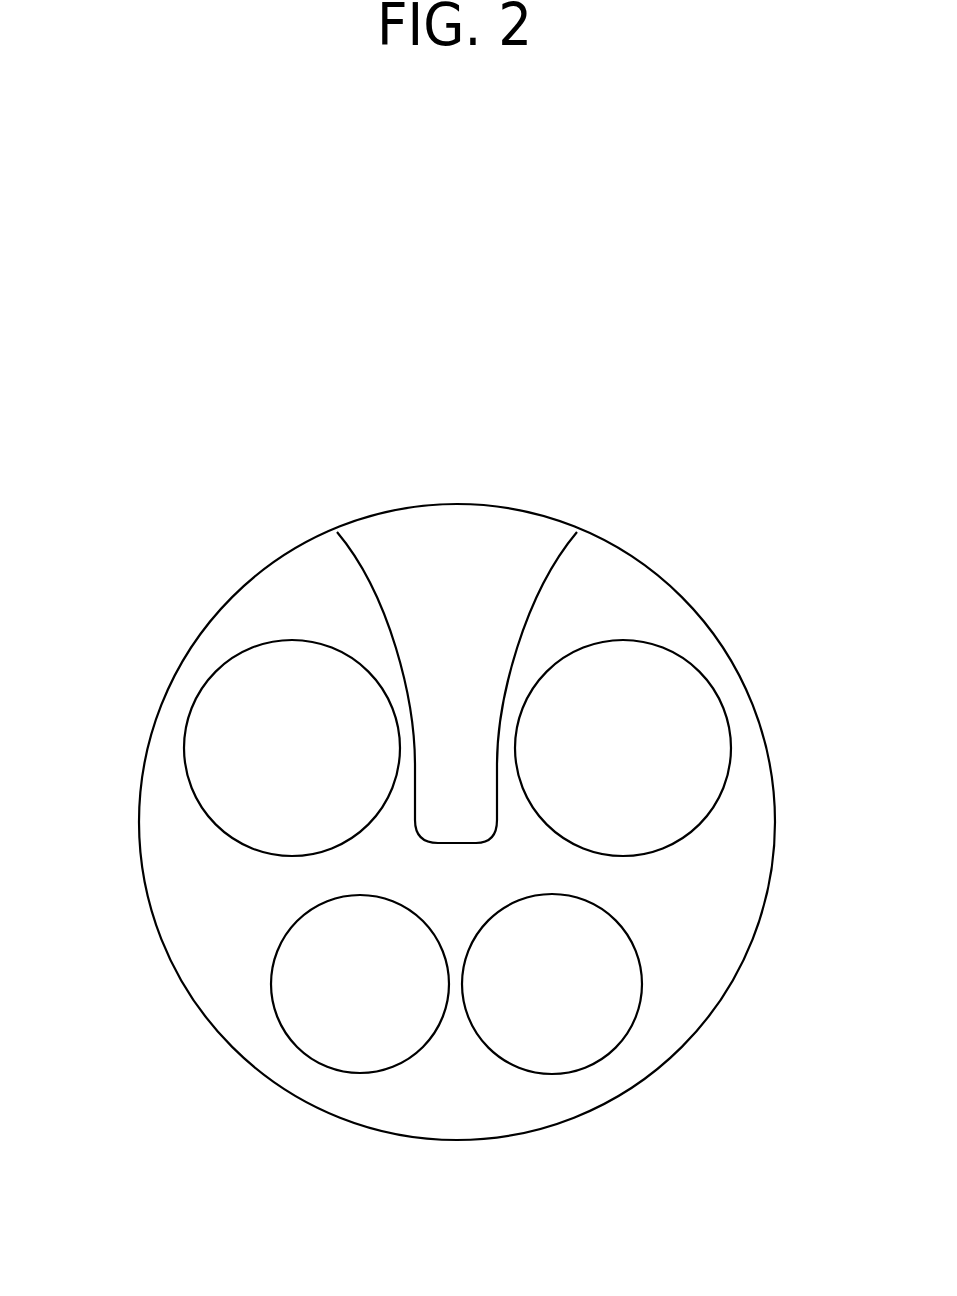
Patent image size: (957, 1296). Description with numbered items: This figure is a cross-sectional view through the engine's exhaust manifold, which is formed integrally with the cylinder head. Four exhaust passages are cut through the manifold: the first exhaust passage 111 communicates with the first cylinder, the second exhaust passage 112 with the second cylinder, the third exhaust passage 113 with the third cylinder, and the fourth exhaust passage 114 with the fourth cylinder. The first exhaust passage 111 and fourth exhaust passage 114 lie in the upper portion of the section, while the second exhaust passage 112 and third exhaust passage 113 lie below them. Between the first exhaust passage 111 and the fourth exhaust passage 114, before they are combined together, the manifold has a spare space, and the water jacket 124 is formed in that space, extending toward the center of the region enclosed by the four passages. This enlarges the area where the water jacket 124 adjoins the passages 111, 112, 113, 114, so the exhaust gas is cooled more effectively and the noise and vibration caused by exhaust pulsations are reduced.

The water jacket 124 is at (557, 514).
The first exhaust passage 111 is at (186, 724).
The second exhaust passage 112 is at (273, 1020).
The third exhaust passage 113 is at (635, 1020).
The fourth exhaust passage 114 is at (730, 727).